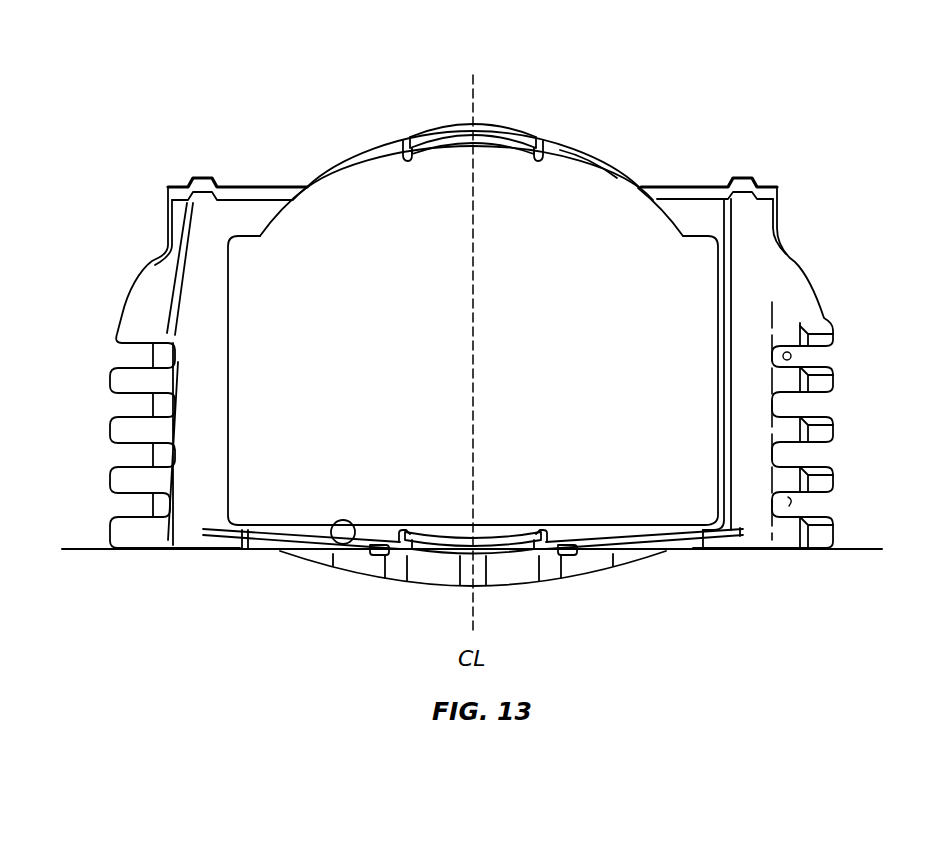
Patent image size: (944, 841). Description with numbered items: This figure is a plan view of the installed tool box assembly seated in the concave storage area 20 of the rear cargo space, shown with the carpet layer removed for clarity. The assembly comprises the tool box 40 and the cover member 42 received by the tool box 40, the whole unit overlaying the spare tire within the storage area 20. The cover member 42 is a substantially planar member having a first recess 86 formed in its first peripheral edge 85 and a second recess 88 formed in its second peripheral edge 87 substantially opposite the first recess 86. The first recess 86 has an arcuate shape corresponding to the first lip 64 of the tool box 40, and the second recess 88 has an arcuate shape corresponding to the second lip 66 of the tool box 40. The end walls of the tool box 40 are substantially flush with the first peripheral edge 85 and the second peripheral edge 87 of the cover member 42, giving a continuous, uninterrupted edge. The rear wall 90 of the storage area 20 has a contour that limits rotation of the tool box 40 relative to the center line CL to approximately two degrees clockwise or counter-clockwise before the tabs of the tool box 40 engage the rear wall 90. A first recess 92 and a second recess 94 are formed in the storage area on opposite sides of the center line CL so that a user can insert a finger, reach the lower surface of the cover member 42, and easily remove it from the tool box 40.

The concave storage area 20 is at (638, 187).
The tool box 40 is at (531, 137).
The cover member 42 is at (367, 173).
The first lip 64 is at (453, 542).
The second lip 66 is at (504, 133).
The first peripheral edge 85 is at (647, 550).
The first recess 86 is at (492, 543).
The second peripheral edge 87 is at (600, 165).
The second recess 88 is at (443, 148).
The rear wall 90 is at (357, 540).
The recess 92 is at (560, 547).
The second recess 94 is at (380, 558).